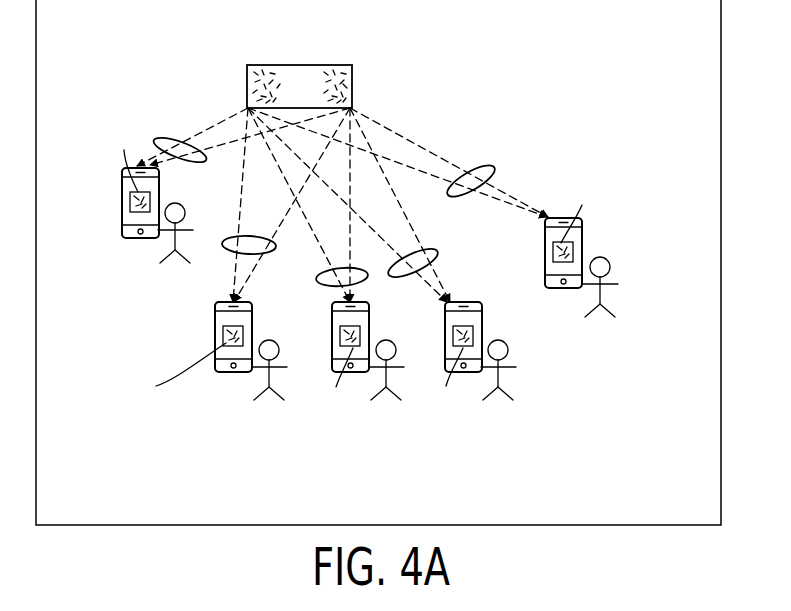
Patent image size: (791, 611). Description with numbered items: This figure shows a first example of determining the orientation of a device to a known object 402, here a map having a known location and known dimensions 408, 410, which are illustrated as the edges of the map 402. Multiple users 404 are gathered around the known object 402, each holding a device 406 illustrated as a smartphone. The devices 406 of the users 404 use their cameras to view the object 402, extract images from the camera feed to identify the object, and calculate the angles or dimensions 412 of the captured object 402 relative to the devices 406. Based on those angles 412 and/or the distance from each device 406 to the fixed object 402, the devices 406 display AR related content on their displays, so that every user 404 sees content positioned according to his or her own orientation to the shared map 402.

The known object 402 is at (452, 90).
The users 404 is at (148, 288).
The devices 406 is at (122, 205).
The known dimension 408 is at (247, 106).
The known dimension 410 is at (352, 106).
The angles or dimensions 412 is at (178, 143).